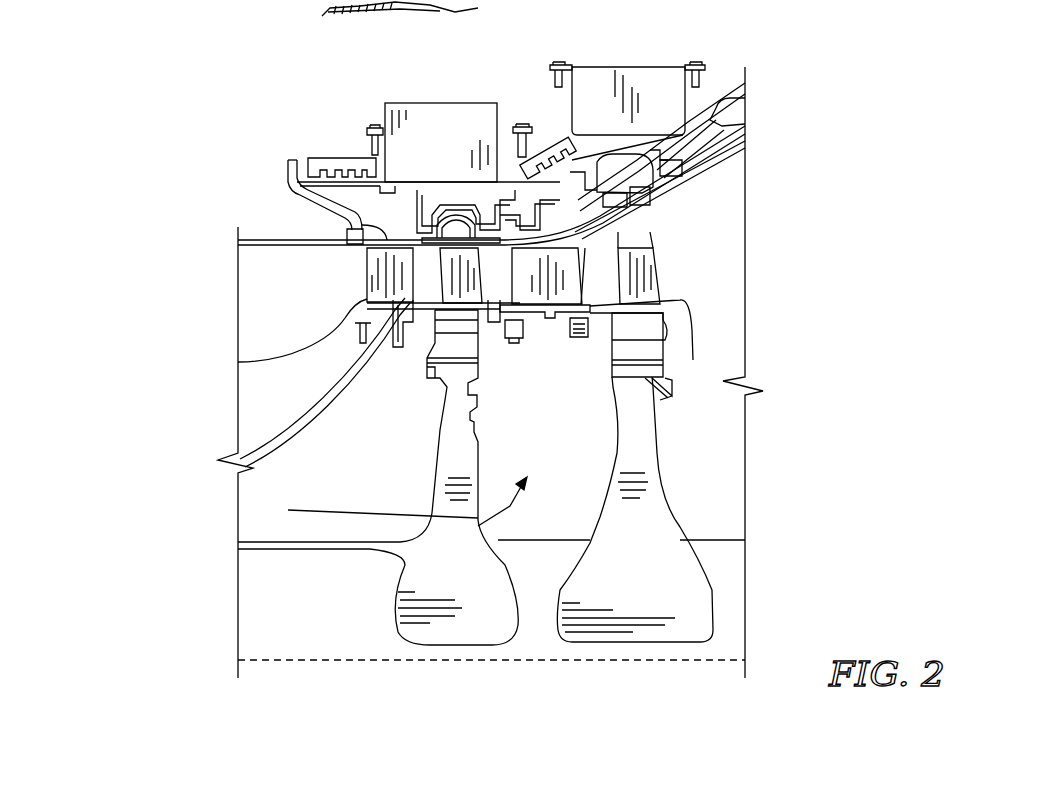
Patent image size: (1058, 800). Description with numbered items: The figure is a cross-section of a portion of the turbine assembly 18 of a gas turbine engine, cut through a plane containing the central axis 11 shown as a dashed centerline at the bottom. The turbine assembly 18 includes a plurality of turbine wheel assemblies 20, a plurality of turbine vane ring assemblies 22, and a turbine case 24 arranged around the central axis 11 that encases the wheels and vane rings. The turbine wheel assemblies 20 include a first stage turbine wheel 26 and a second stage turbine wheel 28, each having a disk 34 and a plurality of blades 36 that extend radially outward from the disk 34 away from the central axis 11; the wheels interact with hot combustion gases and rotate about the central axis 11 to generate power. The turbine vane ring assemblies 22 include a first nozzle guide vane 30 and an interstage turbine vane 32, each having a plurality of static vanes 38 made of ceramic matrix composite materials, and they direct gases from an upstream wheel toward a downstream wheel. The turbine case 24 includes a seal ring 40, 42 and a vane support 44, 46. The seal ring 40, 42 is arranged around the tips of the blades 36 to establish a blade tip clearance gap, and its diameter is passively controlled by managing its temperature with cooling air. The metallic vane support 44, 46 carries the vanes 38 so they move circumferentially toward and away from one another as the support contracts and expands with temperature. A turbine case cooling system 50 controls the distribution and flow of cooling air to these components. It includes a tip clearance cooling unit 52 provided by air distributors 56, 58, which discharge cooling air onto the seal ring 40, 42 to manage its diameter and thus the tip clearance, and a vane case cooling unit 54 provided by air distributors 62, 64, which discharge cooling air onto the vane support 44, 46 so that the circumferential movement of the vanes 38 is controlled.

The central axis 11 is at (300, 661).
The turbine assembly 18 is at (227, 213).
The turbine wheel assemblies 20 is at (340, 490).
The turbine vane ring assemblies 22 is at (182, 256).
The turbine case 24 is at (345, 193).
The first stage turbine wheel 26 is at (430, 463).
The second stage turbine wheel 28 is at (610, 472).
The first nozzle guide vane 30 is at (357, 273).
The interstage turbine vane 32 is at (603, 283).
The disk 34 is at (490, 523).
The blades 36 is at (397, 349).
The static vanes 38 is at (327, 348).
The seal ring 40 is at (458, 235).
The seal ring 42 is at (616, 240).
The vane support 44 is at (347, 224).
The vane support 46 is at (563, 282).
The turbine case cooling system 50 is at (262, 63).
The tip clearance cooling unit 52 is at (590, 15).
The vane case cooling unit 54 is at (500, 43).
The tip clearance cooling air distributor 56 is at (437, 102).
The tip clearance cooling air distributor 58 is at (623, 66).
The vane case cooling air distributor 62 is at (348, 157).
The vane case cooling air distributor 64 is at (548, 145).